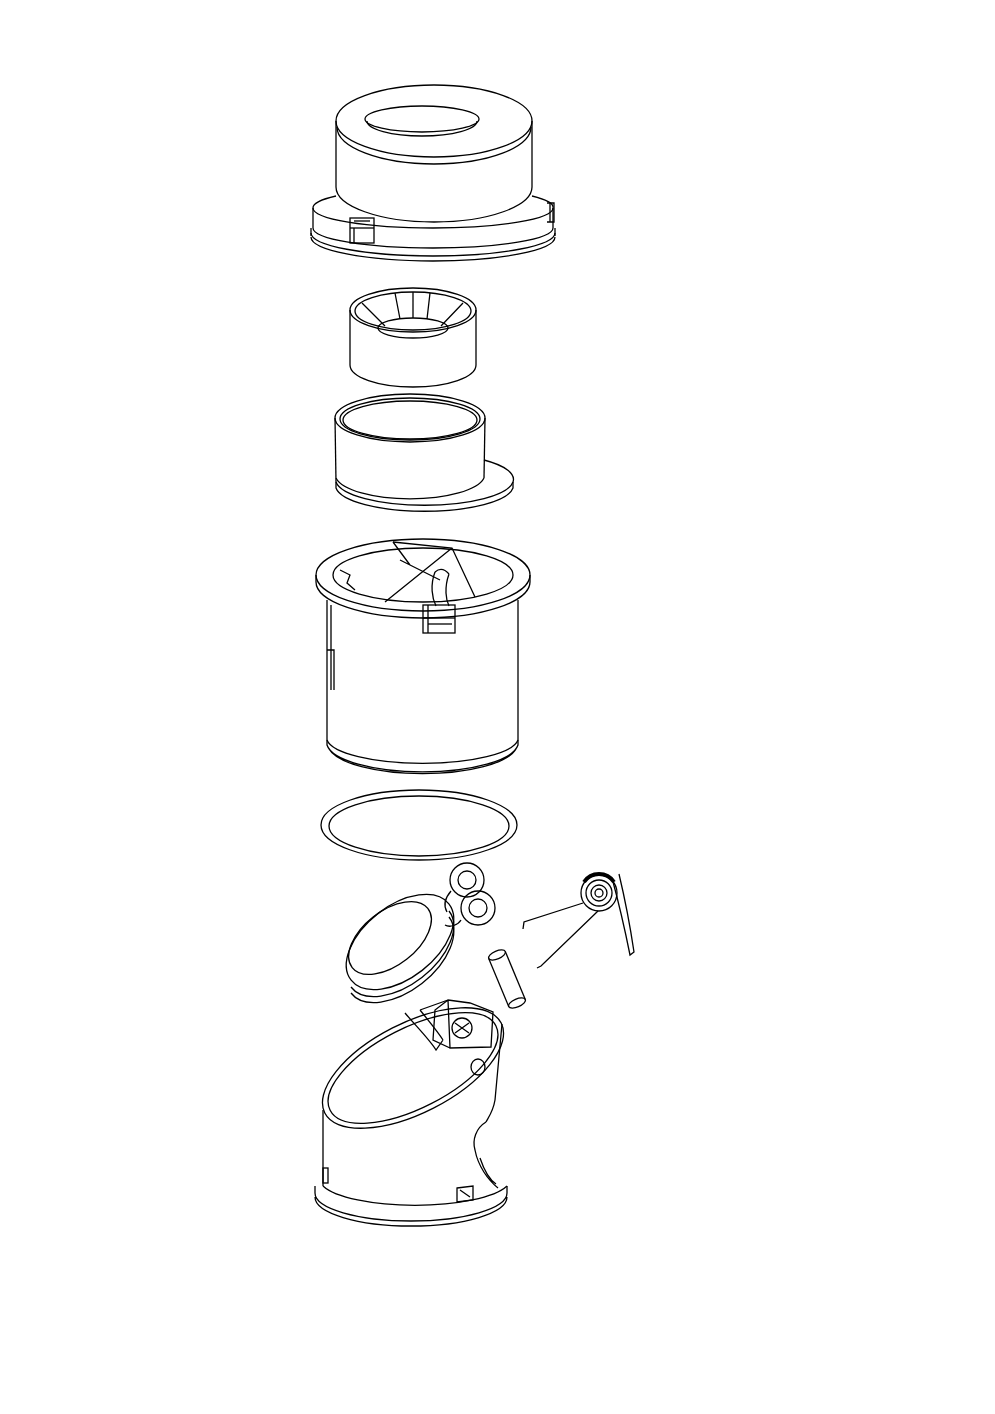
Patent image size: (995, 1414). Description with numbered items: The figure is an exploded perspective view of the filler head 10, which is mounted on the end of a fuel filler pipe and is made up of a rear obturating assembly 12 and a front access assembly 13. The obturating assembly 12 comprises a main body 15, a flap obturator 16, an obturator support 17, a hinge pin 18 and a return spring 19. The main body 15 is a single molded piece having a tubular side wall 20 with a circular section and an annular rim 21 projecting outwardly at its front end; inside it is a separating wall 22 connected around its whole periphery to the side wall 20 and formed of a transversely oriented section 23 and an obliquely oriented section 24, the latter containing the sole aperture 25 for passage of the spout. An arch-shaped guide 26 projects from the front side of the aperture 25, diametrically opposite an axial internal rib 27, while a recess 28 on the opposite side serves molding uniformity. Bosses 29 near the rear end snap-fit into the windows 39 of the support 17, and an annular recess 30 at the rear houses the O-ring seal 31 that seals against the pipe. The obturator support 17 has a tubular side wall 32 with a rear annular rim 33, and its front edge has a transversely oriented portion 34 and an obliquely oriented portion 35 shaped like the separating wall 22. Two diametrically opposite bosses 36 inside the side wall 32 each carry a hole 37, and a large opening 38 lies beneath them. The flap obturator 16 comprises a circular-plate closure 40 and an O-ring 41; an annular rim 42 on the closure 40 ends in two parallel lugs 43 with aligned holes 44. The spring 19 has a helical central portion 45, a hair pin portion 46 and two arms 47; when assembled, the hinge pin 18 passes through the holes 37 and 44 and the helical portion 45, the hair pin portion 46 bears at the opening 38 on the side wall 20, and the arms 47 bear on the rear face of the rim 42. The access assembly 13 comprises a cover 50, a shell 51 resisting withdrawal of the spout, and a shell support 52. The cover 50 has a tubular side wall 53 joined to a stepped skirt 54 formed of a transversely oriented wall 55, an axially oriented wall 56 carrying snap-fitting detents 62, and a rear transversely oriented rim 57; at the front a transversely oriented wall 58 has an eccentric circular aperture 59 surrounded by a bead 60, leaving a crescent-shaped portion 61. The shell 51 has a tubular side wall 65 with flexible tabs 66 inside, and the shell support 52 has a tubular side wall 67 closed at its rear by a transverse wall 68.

The filler head 10 is at (183, 173).
The obturating assembly 12 is at (588, 535).
The access assembly 13 is at (617, 158).
The main body 15 is at (312, 672).
The flap obturator 16 is at (343, 975).
The obturator support 17 is at (308, 1152).
The hinge pin 18 is at (513, 987).
The return spring 19 is at (625, 877).
The side wall 20 is at (503, 700).
The rim 21 is at (523, 580).
The separating wall 22 is at (378, 574).
The transversely oriented section 23 is at (483, 570).
The obliquely oriented section 24 is at (427, 572).
The aperture 25 is at (413, 598).
The guide 26 is at (456, 605).
The internal rib 27 is at (342, 585).
The recess 28 is at (328, 633).
The bosses 29 is at (440, 695).
The annular recess 30 is at (510, 748).
The O-ring seal 31 is at (493, 803).
The side wall 32 is at (463, 1097).
The rim 33 is at (503, 1192).
The transversely oriented portion 34 is at (500, 1027).
The obliquely oriented portion 35 is at (390, 1092).
The bosses 36 is at (455, 1003).
The hole 37 is at (440, 1034).
The opening 38 is at (472, 1147).
The windows 39 is at (323, 1173).
The closure 40 is at (382, 933).
The O-ring 41 is at (357, 953).
The annular rim 42 is at (355, 985).
The lugs 43 is at (485, 898).
The holes 44 is at (463, 882).
The helical central portion 45 is at (598, 877).
The hair pin portion 46 is at (630, 933).
The arms 47 is at (563, 940).
The cover 50 is at (283, 226).
The shell 51 is at (308, 332).
The shell support 52 is at (308, 448).
The side wall 53 is at (532, 165).
The skirt 54 is at (560, 170).
The transversely oriented wall 55 is at (330, 187).
The axially oriented wall 56 is at (325, 210).
The transversely oriented rim 57 is at (540, 246).
The transversely oriented wall 58 is at (505, 88).
The circular aperture 59 is at (390, 116).
The bead 60 is at (350, 113).
The crescent-shaped portion 61 is at (515, 120).
The snap-fitting detents 62 is at (552, 214).
The side wall 65 is at (465, 351).
The flexible tabs 66 is at (375, 300).
The side wall 67 is at (467, 450).
The transverse wall 68 is at (498, 488).